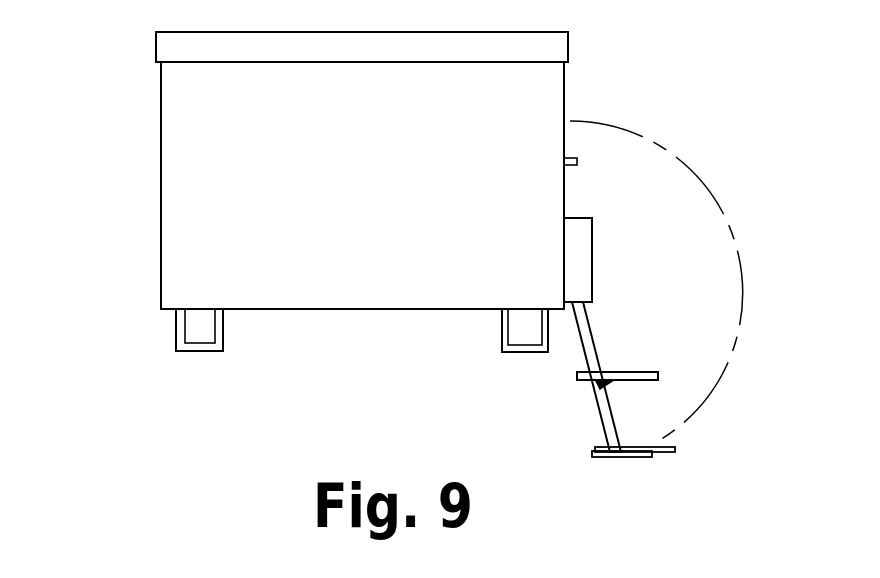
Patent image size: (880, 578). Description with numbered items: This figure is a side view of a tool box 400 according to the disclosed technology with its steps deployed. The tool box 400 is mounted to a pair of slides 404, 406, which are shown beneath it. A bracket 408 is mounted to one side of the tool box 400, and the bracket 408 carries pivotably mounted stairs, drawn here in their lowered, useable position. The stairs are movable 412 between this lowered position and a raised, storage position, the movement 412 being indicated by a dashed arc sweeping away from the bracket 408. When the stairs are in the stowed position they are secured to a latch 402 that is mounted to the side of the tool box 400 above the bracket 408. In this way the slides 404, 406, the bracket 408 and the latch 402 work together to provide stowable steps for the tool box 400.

The tool box 400 is at (161, 190).
The latch 402 is at (577, 162).
The slide 404 is at (200, 352).
The slide 406 is at (522, 353).
The bracket 408 is at (592, 245).
The movement of stairs 412 is at (707, 187).